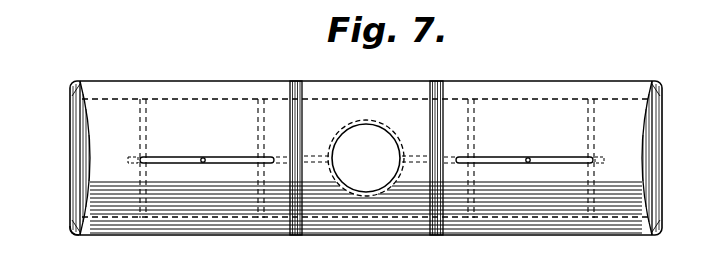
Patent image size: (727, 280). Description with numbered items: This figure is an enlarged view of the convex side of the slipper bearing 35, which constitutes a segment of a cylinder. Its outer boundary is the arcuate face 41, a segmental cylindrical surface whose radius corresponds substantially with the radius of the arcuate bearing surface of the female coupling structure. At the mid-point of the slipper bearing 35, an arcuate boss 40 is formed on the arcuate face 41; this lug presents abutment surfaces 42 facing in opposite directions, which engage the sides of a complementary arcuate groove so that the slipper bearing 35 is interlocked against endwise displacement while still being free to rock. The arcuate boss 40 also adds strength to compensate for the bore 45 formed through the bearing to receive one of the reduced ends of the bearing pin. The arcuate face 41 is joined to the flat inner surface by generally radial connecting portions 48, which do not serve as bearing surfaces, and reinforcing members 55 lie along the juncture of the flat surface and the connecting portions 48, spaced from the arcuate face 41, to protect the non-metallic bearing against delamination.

The slipper bearing 35 is at (545, 53).
The arcuate boss 40 is at (408, 107).
The arcuate face 41 is at (204, 122).
The abutment surfaces 42 is at (293, 109).
The bore 45 is at (357, 186).
The radial connecting portions 48 is at (184, 82).
The reinforcing members 55 is at (73, 236).